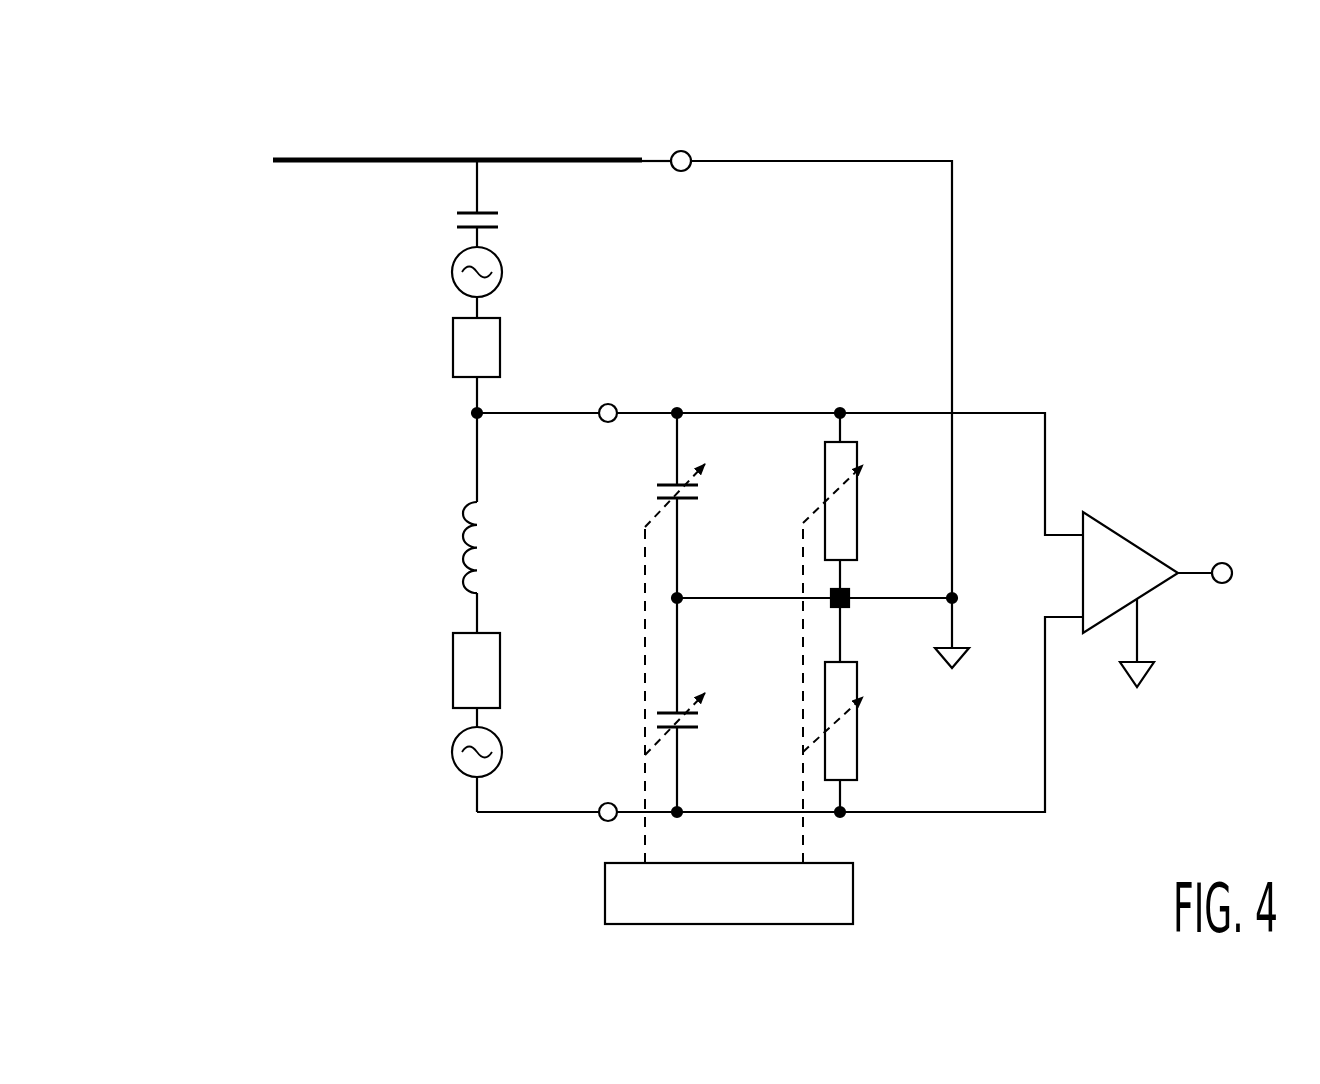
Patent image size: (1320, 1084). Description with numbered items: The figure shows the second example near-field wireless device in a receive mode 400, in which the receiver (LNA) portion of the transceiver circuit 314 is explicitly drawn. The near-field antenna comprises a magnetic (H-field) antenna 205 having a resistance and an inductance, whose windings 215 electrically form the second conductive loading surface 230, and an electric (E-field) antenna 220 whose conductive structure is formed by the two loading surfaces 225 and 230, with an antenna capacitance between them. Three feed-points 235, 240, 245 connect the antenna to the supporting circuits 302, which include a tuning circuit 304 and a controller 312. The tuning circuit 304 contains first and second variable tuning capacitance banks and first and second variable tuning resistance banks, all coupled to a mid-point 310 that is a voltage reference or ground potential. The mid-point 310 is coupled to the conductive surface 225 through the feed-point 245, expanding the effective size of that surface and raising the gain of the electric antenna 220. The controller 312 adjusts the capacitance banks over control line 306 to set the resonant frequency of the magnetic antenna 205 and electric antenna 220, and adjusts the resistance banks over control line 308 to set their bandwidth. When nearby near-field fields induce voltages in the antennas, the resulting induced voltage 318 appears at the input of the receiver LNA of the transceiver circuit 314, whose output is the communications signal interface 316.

The receive mode 400 is at (166, 147).
The electric (E-field) antenna 220 is at (445, 468).
The loading surface 225 is at (346, 166).
The loading surface 230 is at (487, 208).
The feed-point 245 is at (686, 152).
The feed-point 235 is at (608, 404).
The feed-point 240 is at (607, 803).
The windings 215 is at (477, 547).
The magnetic (H-field) antenna 205 is at (445, 468).
The supporting circuits 302 is at (998, 333).
The tuning circuit 304 is at (870, 396).
The control line 306 is at (645, 600).
The control line 308 is at (803, 545).
The mid-point 310 is at (954, 668).
The controller 312 is at (605, 886).
The transceiver circuit 314 is at (1130, 538).
The communications signal interface 316 is at (1228, 560).
The induced voltage (Vlna) 318 is at (1025, 573).